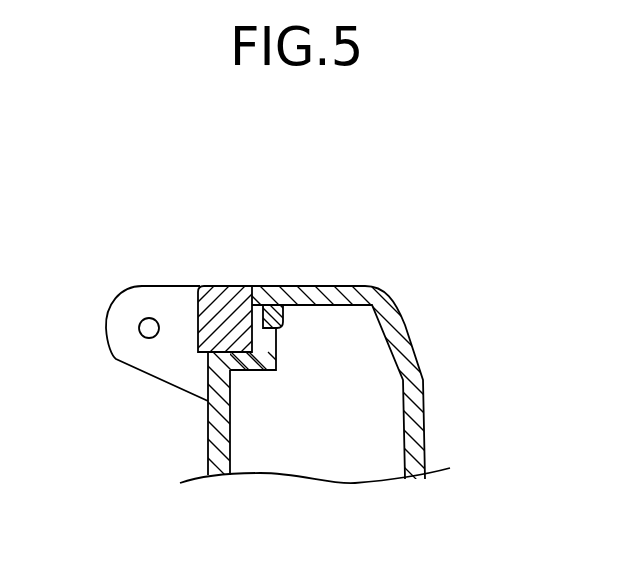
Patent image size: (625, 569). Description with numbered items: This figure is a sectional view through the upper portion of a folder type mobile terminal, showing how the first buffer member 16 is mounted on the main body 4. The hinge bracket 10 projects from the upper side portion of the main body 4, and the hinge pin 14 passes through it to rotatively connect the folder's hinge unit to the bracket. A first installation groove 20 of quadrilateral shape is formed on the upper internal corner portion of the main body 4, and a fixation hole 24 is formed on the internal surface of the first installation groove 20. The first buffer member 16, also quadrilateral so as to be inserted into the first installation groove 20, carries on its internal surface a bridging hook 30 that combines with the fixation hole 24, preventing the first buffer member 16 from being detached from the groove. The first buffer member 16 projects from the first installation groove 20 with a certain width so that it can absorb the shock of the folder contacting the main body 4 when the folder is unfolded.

The main body 4 is at (416, 430).
The hinge bracket 10 is at (156, 358).
The hinge pin 14 is at (149, 328).
The first buffer member 16 is at (220, 306).
The first installation groove 20 is at (208, 377).
The fixation hole 24 is at (258, 304).
The bridging hook 30 is at (283, 318).